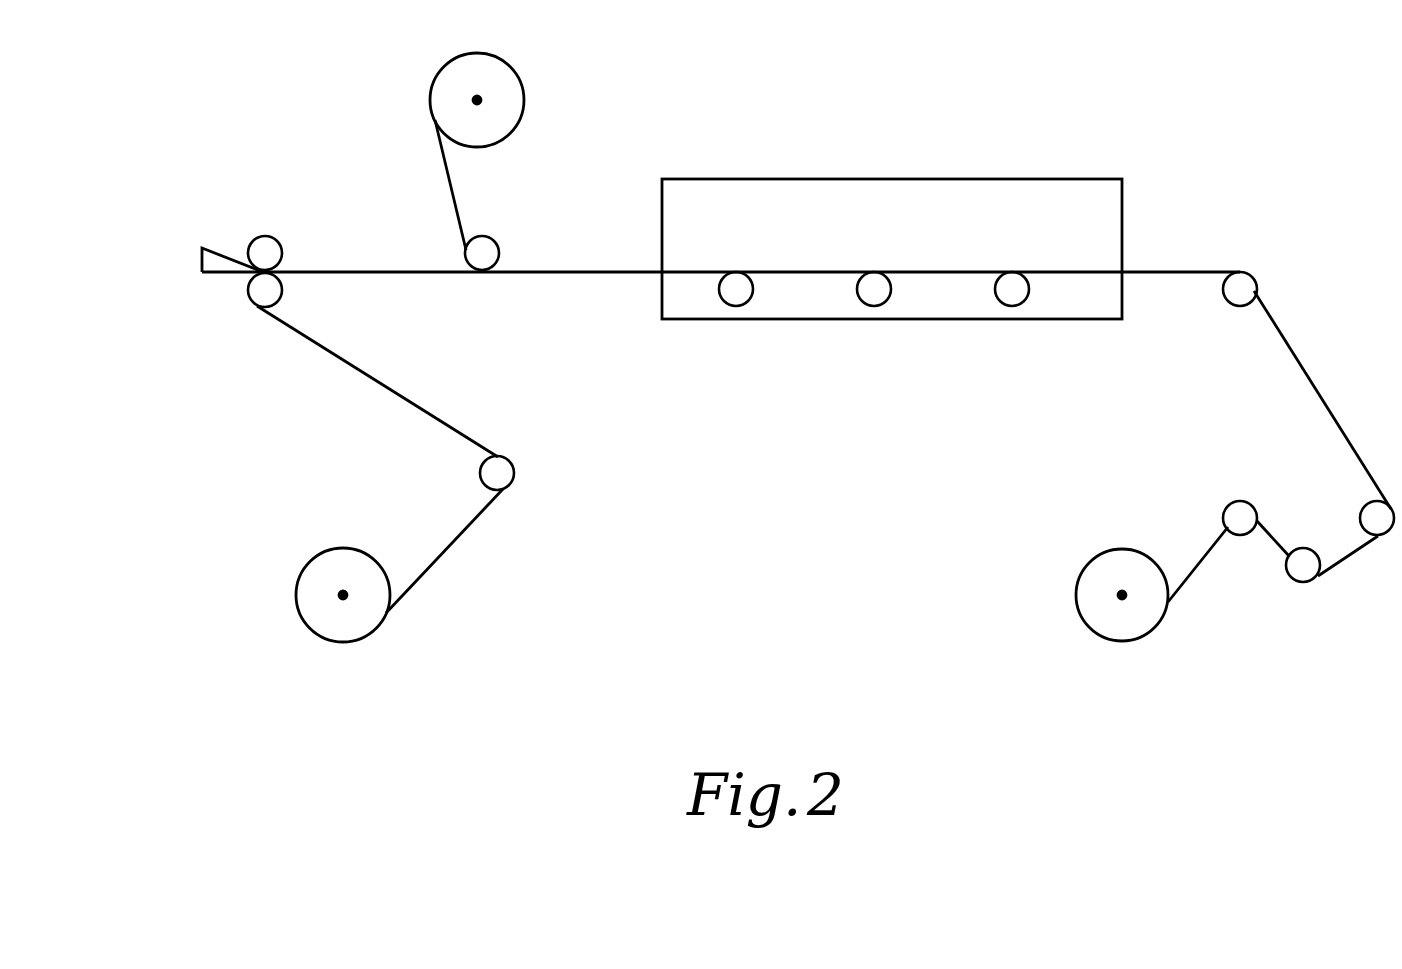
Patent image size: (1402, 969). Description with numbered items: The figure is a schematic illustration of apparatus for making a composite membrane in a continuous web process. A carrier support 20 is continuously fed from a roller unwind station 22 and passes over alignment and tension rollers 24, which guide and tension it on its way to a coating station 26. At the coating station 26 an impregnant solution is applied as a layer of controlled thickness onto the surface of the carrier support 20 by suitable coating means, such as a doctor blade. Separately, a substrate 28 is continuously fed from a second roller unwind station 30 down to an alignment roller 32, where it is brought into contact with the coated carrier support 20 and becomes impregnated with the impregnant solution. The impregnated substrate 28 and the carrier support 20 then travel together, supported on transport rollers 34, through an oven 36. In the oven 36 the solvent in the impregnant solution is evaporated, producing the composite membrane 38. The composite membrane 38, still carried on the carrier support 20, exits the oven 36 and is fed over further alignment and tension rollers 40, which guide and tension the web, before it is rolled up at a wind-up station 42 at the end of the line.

The carrier support 20 is at (447, 555).
The roller unwind station 22 is at (278, 539).
The alignment and tension rollers 24 is at (283, 247).
The coating station 26 is at (186, 222).
The substrate 28 is at (443, 175).
The roller unwind station 30 is at (538, 51).
The alignment roller 32 is at (498, 242).
The transport rollers 34 is at (1000, 302).
The oven 36 is at (1018, 178).
The composite membrane 38 is at (1167, 268).
The alignment and tension rollers 40 is at (1237, 307).
The wind-up station 42 is at (1072, 546).